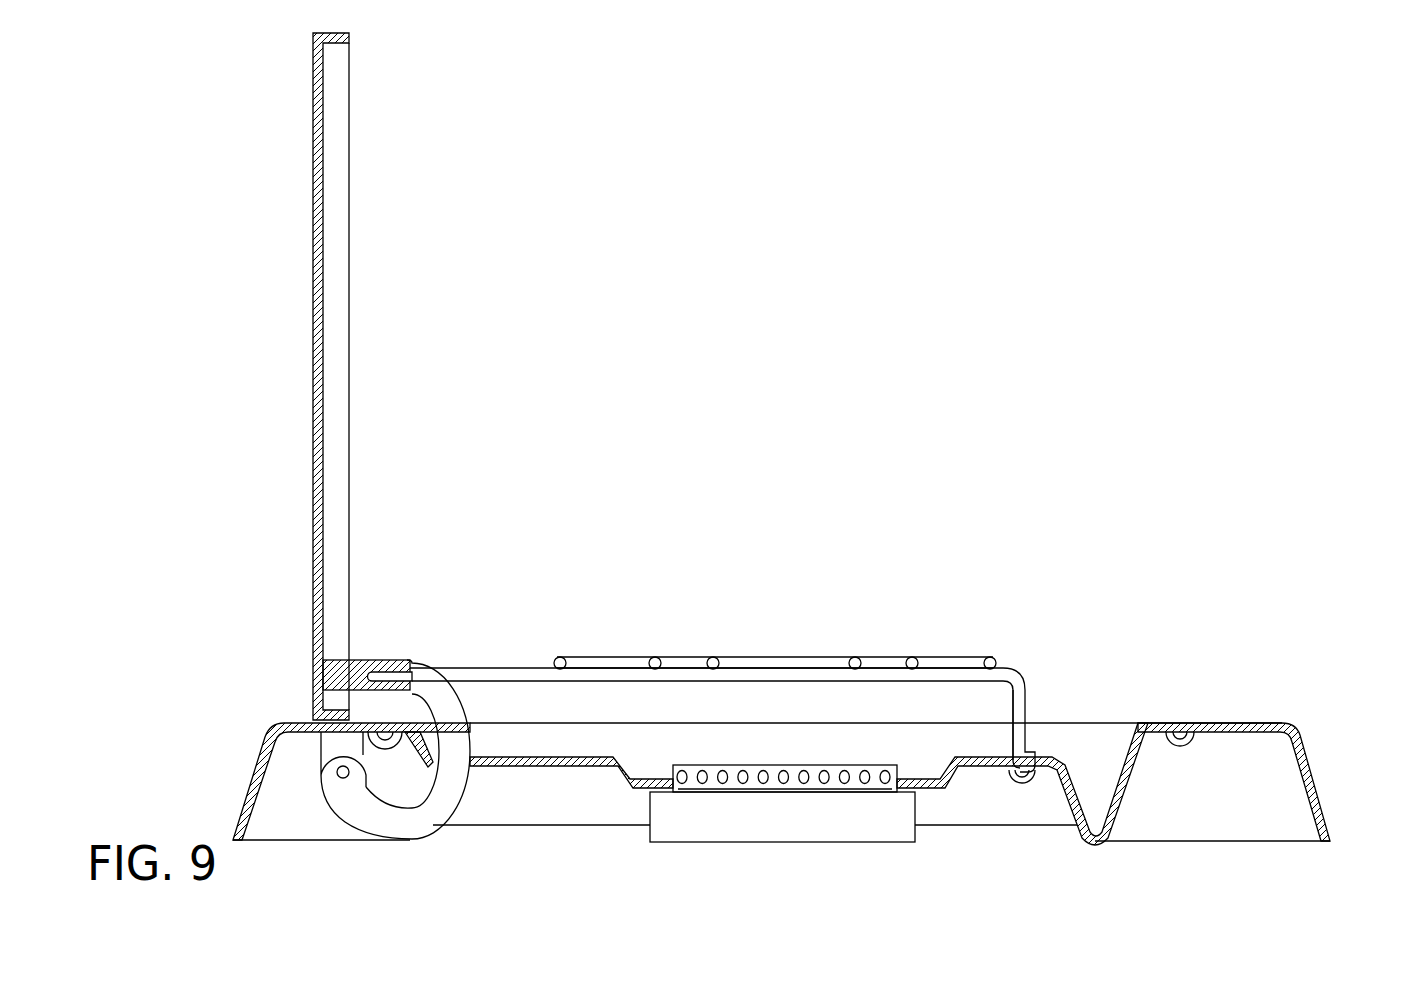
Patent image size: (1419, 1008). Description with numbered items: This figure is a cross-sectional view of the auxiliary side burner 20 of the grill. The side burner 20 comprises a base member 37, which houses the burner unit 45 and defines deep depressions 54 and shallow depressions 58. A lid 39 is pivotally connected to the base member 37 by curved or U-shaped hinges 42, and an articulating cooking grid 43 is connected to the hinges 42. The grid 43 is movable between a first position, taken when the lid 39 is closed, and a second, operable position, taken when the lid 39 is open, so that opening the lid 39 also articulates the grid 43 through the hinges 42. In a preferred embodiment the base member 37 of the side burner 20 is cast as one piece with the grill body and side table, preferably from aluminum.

The auxiliary side burner 20 is at (1252, 688).
The base member 37 is at (1313, 785).
The lid 39 is at (312, 372).
The curved or U-shaped hinges 42 is at (413, 813).
The articulating cooking grid 43 is at (512, 660).
The burner unit 45 is at (833, 785).
The deep depressions 54 is at (1095, 788).
The shallow depressions 58 is at (1018, 772).